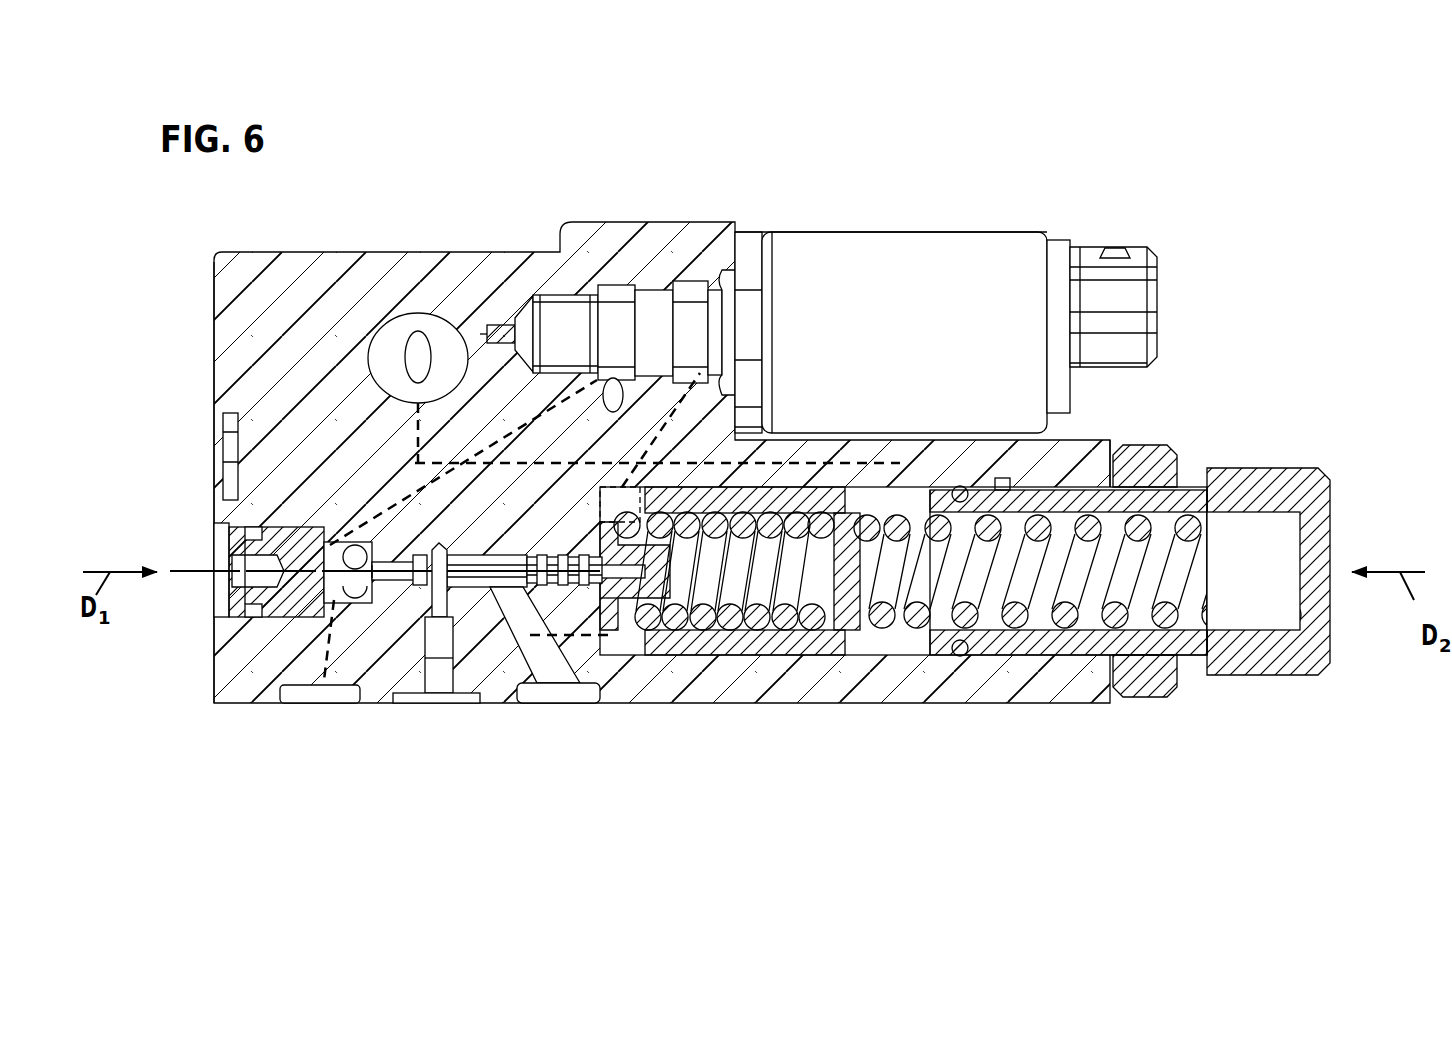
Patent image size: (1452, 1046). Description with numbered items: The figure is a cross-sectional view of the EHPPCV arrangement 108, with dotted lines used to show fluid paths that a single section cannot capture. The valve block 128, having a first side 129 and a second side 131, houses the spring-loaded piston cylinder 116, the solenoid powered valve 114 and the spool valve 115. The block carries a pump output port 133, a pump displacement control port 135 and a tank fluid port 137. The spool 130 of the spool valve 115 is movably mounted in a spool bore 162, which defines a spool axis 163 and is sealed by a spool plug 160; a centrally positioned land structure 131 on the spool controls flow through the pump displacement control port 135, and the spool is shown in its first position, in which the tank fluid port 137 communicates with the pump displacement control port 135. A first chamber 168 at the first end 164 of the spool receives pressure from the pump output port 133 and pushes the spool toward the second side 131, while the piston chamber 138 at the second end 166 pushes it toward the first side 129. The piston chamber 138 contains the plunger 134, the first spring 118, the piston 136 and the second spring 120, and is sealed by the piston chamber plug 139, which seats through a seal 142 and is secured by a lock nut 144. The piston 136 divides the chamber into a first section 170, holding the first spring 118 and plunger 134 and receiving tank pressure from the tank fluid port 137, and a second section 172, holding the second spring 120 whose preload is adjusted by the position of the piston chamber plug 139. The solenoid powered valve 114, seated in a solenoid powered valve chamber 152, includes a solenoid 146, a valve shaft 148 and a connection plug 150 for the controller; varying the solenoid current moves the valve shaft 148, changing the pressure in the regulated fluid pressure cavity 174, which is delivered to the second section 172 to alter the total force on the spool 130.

The EHPPCV arrangement 108 is at (1287, 165).
The solenoid powered valve 114 is at (890, 208).
The spool valve 115 is at (420, 535).
The spring-loaded piston cylinder 116 is at (912, 680).
The first spring 118 is at (737, 580).
The second spring 120 is at (975, 575).
The valve block 128 is at (298, 280).
The first side 129 is at (205, 272).
The spool 130 is at (476, 580).
The second side 131 is at (437, 586).
The pump output port 133 is at (300, 697).
The plunger 134 is at (642, 590).
The pump displacement control port 135 is at (432, 643).
The piston 136 is at (815, 640).
The tank fluid port 137 is at (555, 672).
The piston chamber 138 is at (877, 655).
The piston chamber plug 139 is at (1132, 640).
The seal 142 is at (965, 492).
The lock nut 144 is at (1163, 452).
The solenoid 146 is at (968, 267).
The valve shaft 148 is at (648, 310).
The connection plug 150 is at (1137, 257).
The solenoid powered valve chamber 152 is at (573, 293).
The spool plug 160 is at (237, 605).
The spool bore 162 is at (492, 585).
The spool axis 163 is at (390, 578).
The first end 164 is at (345, 568).
The second end 166 is at (595, 580).
The first chamber 168 is at (330, 592).
The first section 170 is at (633, 642).
The second section 172 is at (903, 640).
The regulated fluid pressure cavity 174 is at (430, 327).